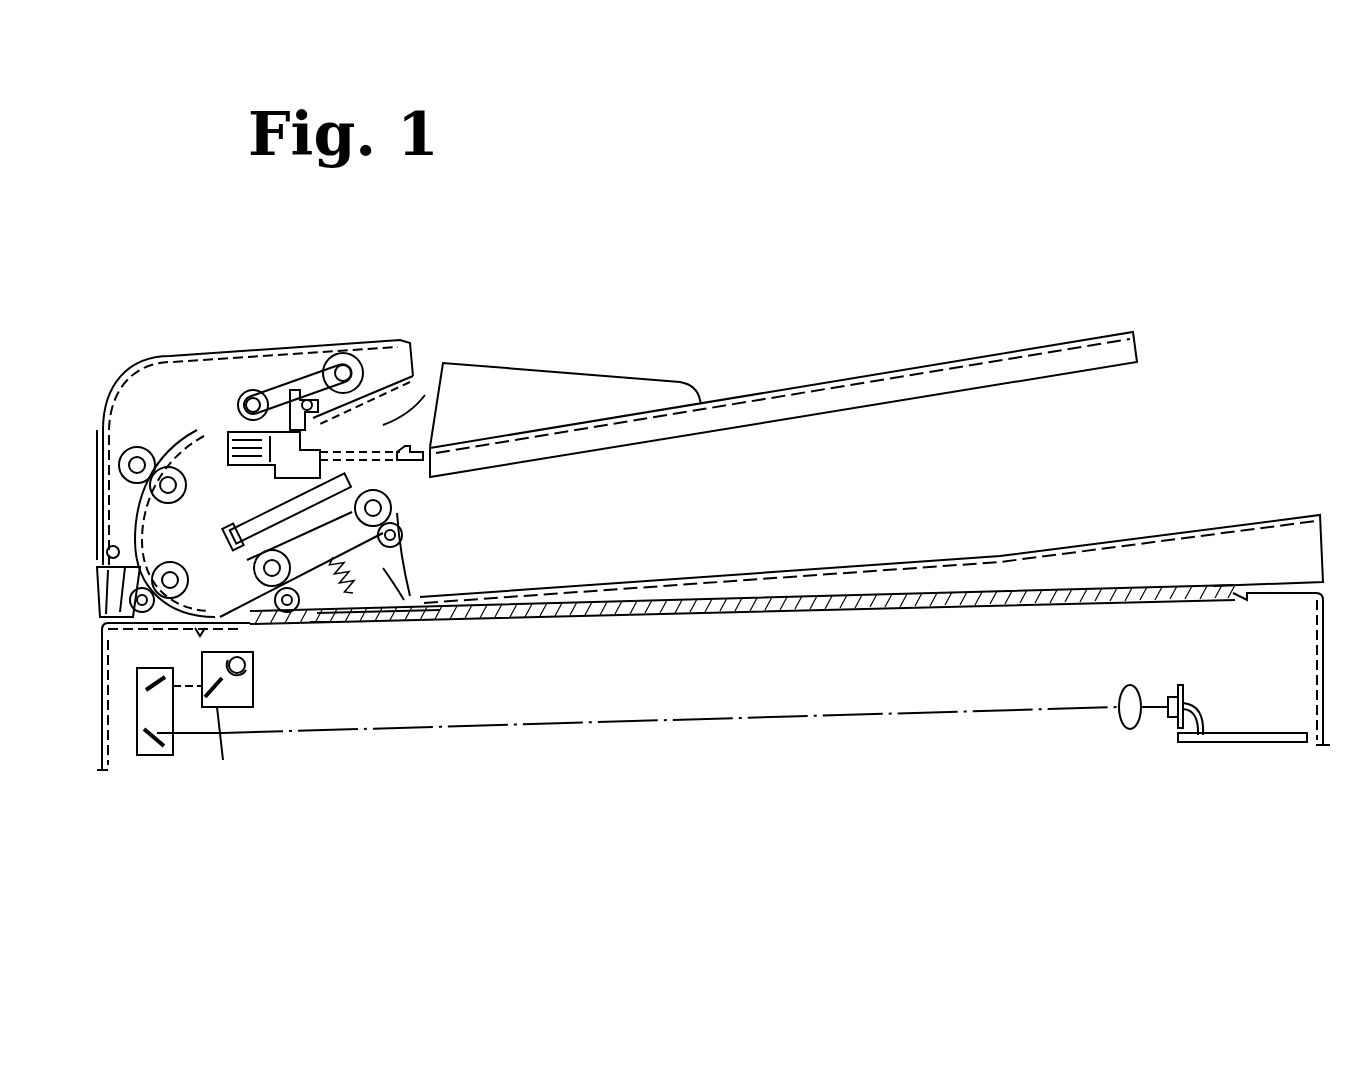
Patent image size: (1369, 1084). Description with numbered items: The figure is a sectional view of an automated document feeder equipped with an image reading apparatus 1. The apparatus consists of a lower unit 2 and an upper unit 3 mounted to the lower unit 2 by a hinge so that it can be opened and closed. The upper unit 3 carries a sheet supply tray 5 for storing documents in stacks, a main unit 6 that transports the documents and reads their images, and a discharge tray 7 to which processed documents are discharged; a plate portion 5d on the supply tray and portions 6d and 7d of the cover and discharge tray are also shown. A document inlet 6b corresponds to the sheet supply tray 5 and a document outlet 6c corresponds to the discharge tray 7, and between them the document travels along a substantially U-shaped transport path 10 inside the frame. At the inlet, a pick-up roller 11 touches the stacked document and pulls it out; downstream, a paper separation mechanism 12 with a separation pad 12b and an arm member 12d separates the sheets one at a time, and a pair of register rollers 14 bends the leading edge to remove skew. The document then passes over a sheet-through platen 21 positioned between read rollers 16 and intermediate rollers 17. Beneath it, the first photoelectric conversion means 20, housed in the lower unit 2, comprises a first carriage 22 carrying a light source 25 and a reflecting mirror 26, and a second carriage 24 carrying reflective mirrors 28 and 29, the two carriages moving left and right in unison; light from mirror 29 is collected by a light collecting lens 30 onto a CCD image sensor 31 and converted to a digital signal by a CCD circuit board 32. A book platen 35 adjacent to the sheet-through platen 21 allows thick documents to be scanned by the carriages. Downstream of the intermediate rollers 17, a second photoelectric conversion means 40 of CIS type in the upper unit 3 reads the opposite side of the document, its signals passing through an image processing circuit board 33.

The image reading apparatus 1 is at (778, 228).
The lower unit 2 is at (683, 738).
The upper unit 3 is at (1183, 473).
The sheet supply tray 5 is at (783, 378).
The document pressing portion 5d is at (668, 383).
The main unit 6 is at (305, 406).
The document inlet 6b is at (392, 420).
The document outlet 6c is at (398, 516).
The cover outer surface 6d is at (155, 358).
The discharge tray 7 is at (871, 540).
The discharge tray surface 7d is at (1113, 583).
The transport path 10 is at (203, 423).
The pick-up roller 11 is at (363, 345).
The paper separation mechanism 12 is at (259, 333).
The separation pad 12b is at (270, 285).
The arm member 12d is at (253, 385).
The register rollers 14 is at (124, 447).
The read rollers 16 is at (118, 608).
The intermediate rollers 17 is at (322, 627).
The first photoelectric conversion means 20 is at (258, 745).
The sheet-through platen 21 is at (198, 640).
The first carriage 22 is at (253, 653).
The second carriage 24 is at (116, 748).
The light source 25 is at (265, 713).
The reflecting mirror 26 is at (227, 733).
The reflective mirror 28 is at (140, 683).
The reflective mirror 29 is at (143, 757).
The light collecting lens 30 is at (1130, 718).
The CCD image sensor 31 is at (1172, 718).
The CCD circuit board 32 is at (1183, 687).
The image processing circuit board 33 is at (1248, 742).
The book platen 35 is at (762, 613).
The second photoelectric conversion means 40 is at (387, 620).